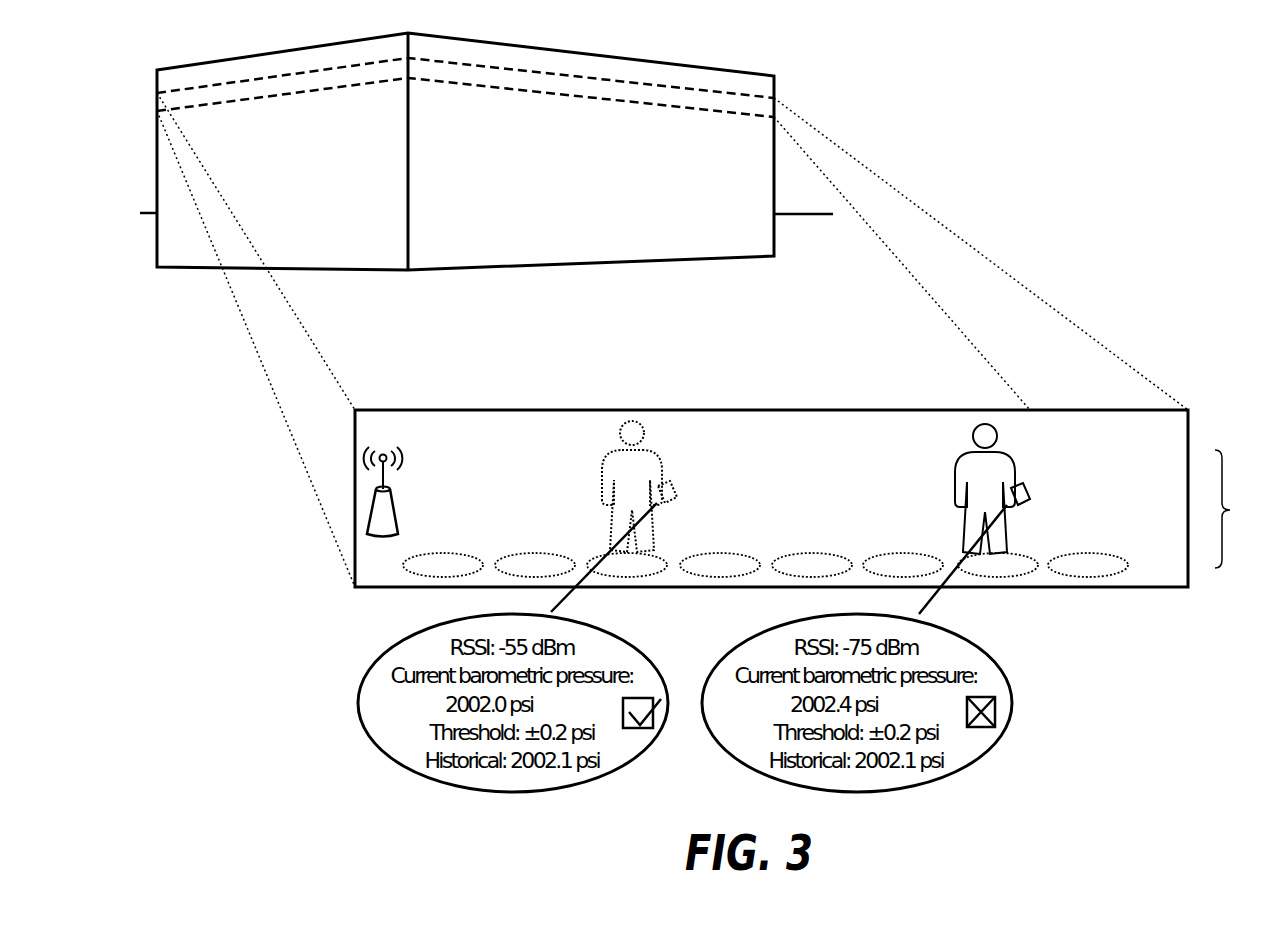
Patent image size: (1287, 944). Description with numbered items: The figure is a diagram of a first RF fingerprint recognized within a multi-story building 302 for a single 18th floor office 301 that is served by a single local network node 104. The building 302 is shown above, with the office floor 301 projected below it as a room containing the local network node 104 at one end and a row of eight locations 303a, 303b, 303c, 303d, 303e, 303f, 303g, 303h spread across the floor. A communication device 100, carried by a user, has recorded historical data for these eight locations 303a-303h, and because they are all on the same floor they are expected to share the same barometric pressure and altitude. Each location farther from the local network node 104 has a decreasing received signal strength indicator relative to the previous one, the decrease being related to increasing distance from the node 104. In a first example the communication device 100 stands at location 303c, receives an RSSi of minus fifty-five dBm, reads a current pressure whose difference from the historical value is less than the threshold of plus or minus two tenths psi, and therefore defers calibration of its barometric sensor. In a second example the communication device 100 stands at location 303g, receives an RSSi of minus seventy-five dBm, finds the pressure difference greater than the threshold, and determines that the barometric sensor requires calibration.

The communication device 100 is at (673, 500).
The local network node 104 is at (398, 518).
The single 18th floor office 301 is at (690, 107).
The multi-story building 302 is at (777, 167).
The location 303a is at (443, 565).
The location 303b is at (535, 565).
The location 303c is at (627, 565).
The location 303d is at (720, 565).
The location 303e is at (812, 565).
The location 303f is at (903, 565).
The location 303g is at (998, 565).
The location 303h is at (1088, 565).